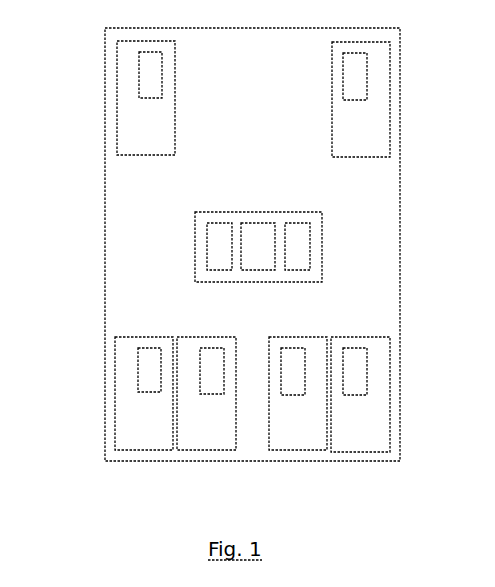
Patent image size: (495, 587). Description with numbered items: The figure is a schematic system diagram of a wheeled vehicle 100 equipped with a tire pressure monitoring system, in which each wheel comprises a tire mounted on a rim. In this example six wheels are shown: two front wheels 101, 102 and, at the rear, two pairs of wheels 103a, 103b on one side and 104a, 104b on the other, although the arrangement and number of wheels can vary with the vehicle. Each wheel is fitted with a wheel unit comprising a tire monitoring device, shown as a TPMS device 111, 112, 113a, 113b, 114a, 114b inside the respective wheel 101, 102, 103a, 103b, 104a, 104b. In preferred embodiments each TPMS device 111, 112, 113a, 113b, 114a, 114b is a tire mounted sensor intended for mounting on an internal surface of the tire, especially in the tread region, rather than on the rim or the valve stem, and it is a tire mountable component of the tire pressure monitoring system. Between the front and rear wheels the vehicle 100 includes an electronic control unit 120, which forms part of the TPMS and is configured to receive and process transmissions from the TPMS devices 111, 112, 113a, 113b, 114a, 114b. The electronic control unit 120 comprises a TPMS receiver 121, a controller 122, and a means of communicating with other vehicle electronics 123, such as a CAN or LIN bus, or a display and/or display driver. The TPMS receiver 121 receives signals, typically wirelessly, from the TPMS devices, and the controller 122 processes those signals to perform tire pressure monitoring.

The wheeled vehicle 100 is at (401, 224).
The wheel 101 is at (146, 73).
The TPMS device 111 is at (150, 88).
The wheel 102 is at (378, 78).
The TPMS device 112 is at (355, 88).
The electronic control unit 120 is at (195, 258).
The TPMS receiver 121 is at (219, 235).
The controller 122 is at (263, 235).
The means of communicating with other vehicle electronics 123 is at (298, 235).
The wheel 103a is at (128, 377).
The TPMS device 113a is at (150, 358).
The wheel 103b is at (212, 437).
The TPMS device 113b is at (212, 378).
The wheel 104a is at (378, 387).
The TPMS device 114a is at (360, 365).
The wheel 104b is at (296, 440).
The TPMS device 114b is at (292, 378).